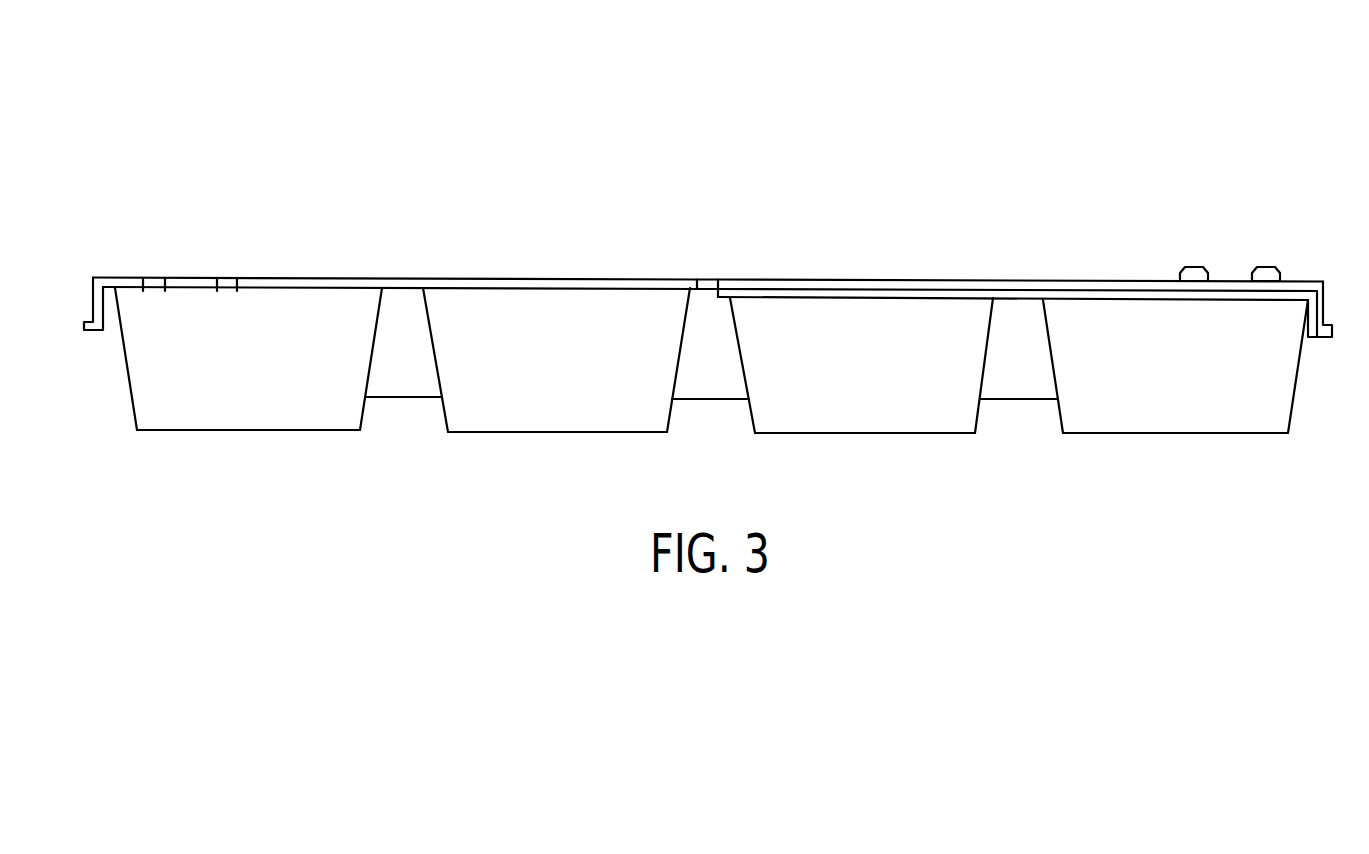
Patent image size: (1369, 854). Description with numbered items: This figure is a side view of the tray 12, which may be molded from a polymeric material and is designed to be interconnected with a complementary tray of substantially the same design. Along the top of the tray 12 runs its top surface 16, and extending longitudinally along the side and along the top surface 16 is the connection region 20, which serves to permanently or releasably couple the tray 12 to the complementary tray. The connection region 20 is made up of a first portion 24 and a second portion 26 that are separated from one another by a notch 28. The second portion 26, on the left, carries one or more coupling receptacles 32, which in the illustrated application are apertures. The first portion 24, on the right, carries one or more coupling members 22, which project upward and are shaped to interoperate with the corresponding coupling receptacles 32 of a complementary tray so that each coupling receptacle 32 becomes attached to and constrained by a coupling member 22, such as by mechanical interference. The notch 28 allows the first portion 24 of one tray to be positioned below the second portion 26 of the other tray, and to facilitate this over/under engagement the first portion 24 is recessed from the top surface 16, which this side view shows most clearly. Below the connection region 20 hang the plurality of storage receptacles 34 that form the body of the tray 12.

The tray 12 is at (728, 73).
The top surface 16 is at (1022, 281).
The connection region 20 is at (103, 238).
The coupling member 22 is at (1268, 285).
The first portion 24 is at (1337, 272).
The second portion 26 is at (700, 275).
The notch 28 is at (709, 279).
The coupling receptacle 32 is at (228, 288).
The storage receptacle 34 is at (280, 432).